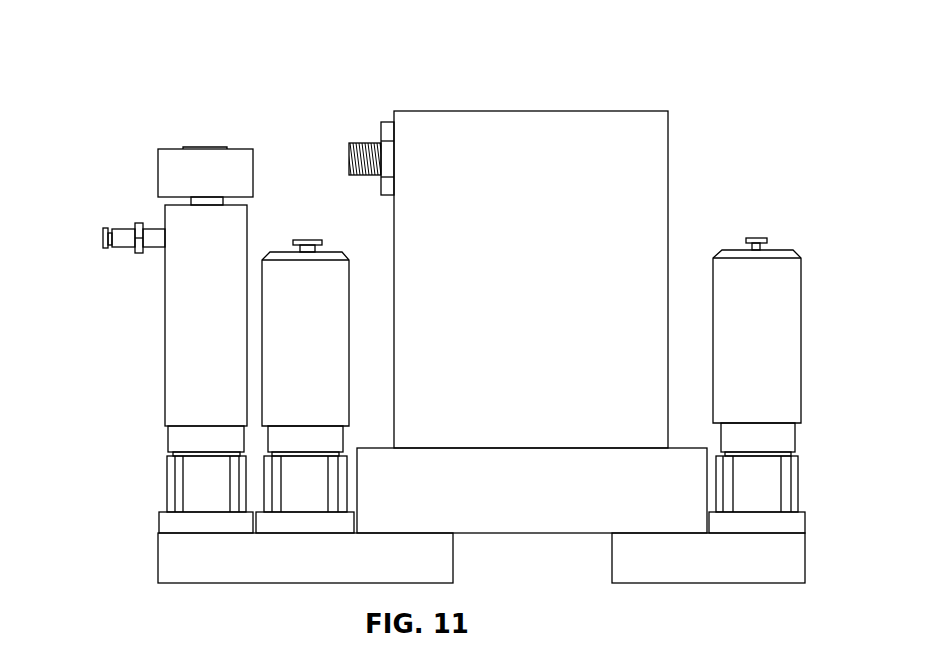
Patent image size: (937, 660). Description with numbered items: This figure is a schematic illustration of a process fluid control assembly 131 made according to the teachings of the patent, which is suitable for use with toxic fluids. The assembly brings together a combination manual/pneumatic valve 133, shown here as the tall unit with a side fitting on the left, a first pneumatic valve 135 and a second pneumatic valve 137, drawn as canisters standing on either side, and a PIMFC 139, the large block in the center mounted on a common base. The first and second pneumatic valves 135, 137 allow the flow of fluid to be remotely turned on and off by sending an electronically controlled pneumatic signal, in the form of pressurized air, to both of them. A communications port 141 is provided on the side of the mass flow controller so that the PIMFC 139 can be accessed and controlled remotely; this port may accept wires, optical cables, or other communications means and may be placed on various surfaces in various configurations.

The process fluid control assembly 131 is at (106, 44).
The combination manual/pneumatic valve 133 is at (162, 330).
The first pneumatic valve 135 is at (330, 252).
The second pneumatic valve 137 is at (780, 250).
The PIMFC 139 is at (532, 110).
The communications port 141 is at (365, 143).